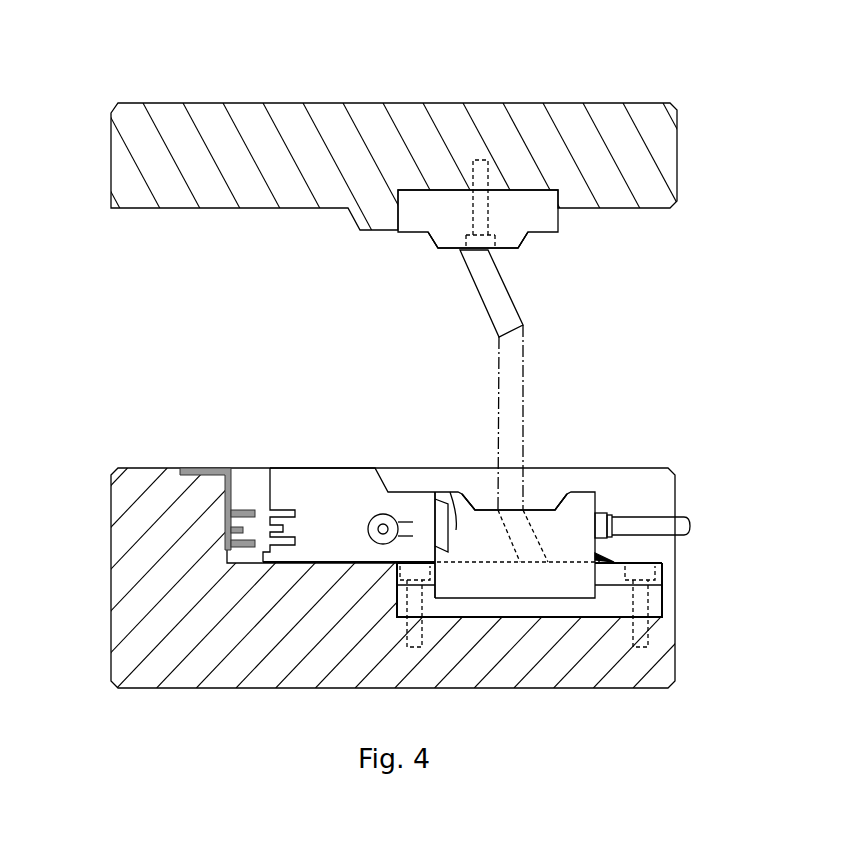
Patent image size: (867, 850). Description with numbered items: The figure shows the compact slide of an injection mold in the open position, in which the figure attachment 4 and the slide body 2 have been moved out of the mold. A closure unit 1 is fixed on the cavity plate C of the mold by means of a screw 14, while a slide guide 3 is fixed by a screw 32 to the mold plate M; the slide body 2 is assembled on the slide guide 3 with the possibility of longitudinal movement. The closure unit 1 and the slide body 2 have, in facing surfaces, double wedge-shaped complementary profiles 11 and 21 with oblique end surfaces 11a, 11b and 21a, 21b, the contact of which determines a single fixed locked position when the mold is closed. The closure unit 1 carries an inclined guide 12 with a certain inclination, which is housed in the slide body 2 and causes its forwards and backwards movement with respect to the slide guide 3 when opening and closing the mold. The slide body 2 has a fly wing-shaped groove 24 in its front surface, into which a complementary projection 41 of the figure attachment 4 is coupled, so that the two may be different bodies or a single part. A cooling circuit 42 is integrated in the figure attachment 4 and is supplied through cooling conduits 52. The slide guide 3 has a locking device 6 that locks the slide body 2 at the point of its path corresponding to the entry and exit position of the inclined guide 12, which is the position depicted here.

The cavity plate C is at (143, 166).
The mold plate M is at (148, 549).
The closure unit 1 is at (558, 226).
The double wedge-shaped complementary profile 11 is at (511, 250).
The oblique end surface 11a is at (524, 242).
The oblique end surface 11b is at (435, 244).
The inclined guide 12 is at (498, 298).
The screw 14 is at (477, 161).
The slide body 2 is at (578, 502).
The double wedge-shaped complementary profile 21 is at (547, 470).
The oblique end surface 21a is at (575, 470).
The oblique end surface 21b is at (478, 494).
The fly wing-shaped groove 24 is at (457, 518).
The slide guide 3 is at (663, 600).
The screw 32 is at (649, 642).
The figure attachment 4 is at (312, 490).
The projection 41 is at (440, 532).
The cooling circuit 42 is at (374, 527).
The cooling conduit 52 is at (658, 527).
The locking device 6 is at (614, 558).